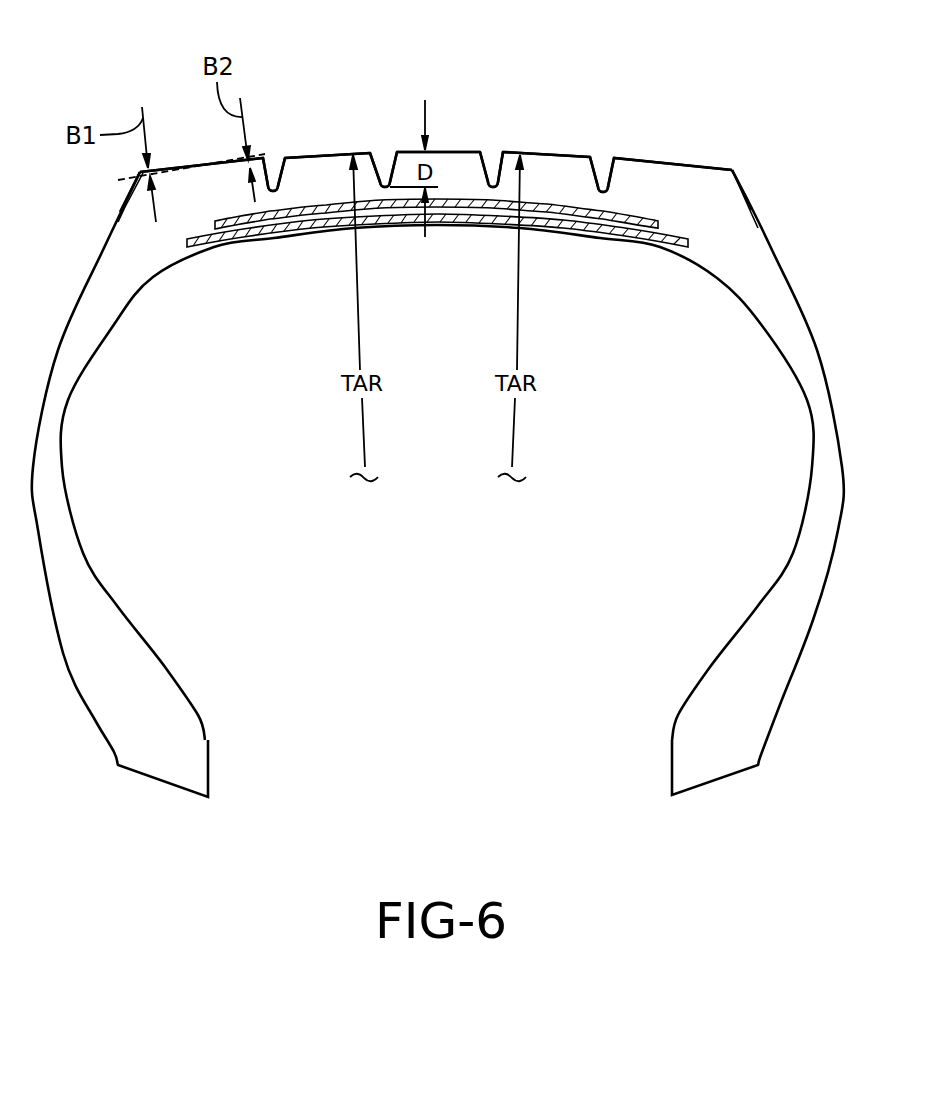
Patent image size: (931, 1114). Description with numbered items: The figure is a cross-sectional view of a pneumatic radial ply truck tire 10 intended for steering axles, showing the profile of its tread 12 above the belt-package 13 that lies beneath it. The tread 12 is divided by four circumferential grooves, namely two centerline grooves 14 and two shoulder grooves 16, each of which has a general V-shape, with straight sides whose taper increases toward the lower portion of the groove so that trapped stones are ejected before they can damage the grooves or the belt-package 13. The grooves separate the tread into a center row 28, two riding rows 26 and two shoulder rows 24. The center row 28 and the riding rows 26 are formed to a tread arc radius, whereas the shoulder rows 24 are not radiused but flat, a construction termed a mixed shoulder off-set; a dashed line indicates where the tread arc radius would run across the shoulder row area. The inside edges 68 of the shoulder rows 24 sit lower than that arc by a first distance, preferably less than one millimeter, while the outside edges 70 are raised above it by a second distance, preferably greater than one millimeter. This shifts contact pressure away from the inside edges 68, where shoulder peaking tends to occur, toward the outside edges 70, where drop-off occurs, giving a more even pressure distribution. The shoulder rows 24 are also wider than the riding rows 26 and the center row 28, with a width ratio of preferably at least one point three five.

The tire 10 is at (90, 597).
The tread 12 is at (688, 192).
The belt-package 13 is at (303, 212).
The centerline grooves 14 is at (385, 155).
The shoulder grooves 16 is at (273, 165).
The shoulder rows 24 is at (203, 163).
The riding rows 26 is at (322, 158).
The center row 28 is at (443, 155).
The inside edges 68 is at (222, 167).
The outside edges 70 is at (163, 165).